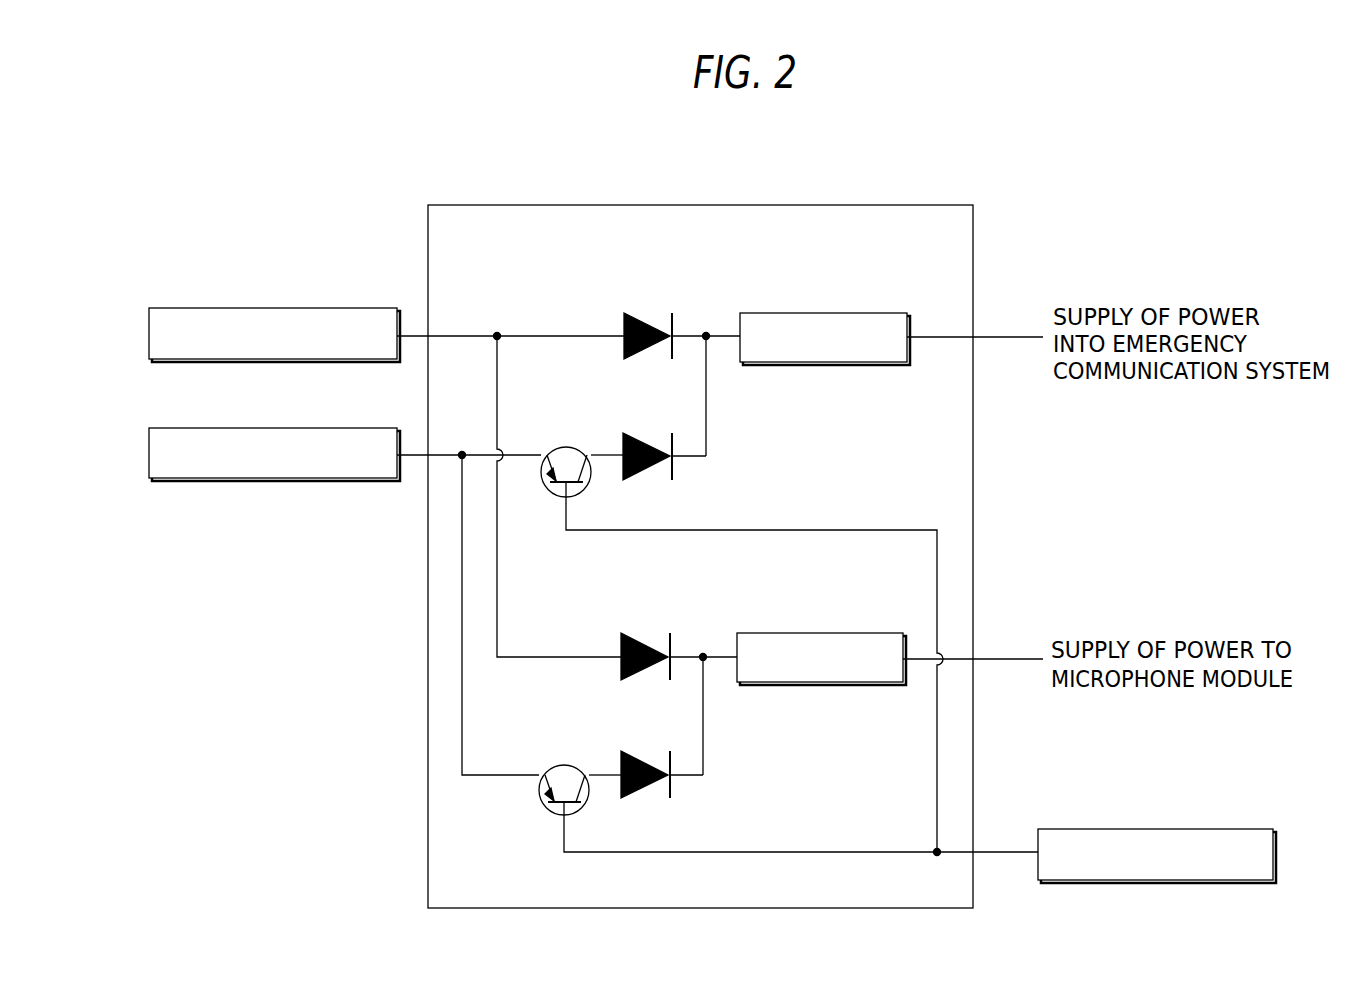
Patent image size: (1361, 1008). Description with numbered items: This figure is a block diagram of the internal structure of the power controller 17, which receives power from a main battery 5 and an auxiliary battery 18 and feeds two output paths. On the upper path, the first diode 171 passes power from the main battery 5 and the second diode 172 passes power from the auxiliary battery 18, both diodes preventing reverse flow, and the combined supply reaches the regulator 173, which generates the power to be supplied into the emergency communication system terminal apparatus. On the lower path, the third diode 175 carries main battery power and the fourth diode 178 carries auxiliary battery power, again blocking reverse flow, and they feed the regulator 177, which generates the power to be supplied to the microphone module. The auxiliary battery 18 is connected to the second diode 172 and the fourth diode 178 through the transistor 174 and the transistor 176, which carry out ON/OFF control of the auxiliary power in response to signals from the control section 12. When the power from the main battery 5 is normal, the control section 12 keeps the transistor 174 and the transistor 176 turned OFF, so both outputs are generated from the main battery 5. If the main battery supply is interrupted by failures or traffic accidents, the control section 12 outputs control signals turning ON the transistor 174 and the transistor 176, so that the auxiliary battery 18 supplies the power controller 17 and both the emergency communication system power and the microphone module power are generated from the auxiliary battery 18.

The main battery 5 is at (275, 308).
The auxiliary battery 18 is at (278, 428).
The power controller 17 is at (703, 205).
The first diode 171 is at (637, 317).
The second diode 172 is at (637, 436).
The regulator 173 is at (822, 313).
The transistor 174 is at (568, 447).
The third diode 175 is at (637, 637).
The transistor 176 is at (567, 765).
The regulator 177 is at (822, 633).
The fourth diode 178 is at (637, 755).
The control section 12 is at (1156, 829).